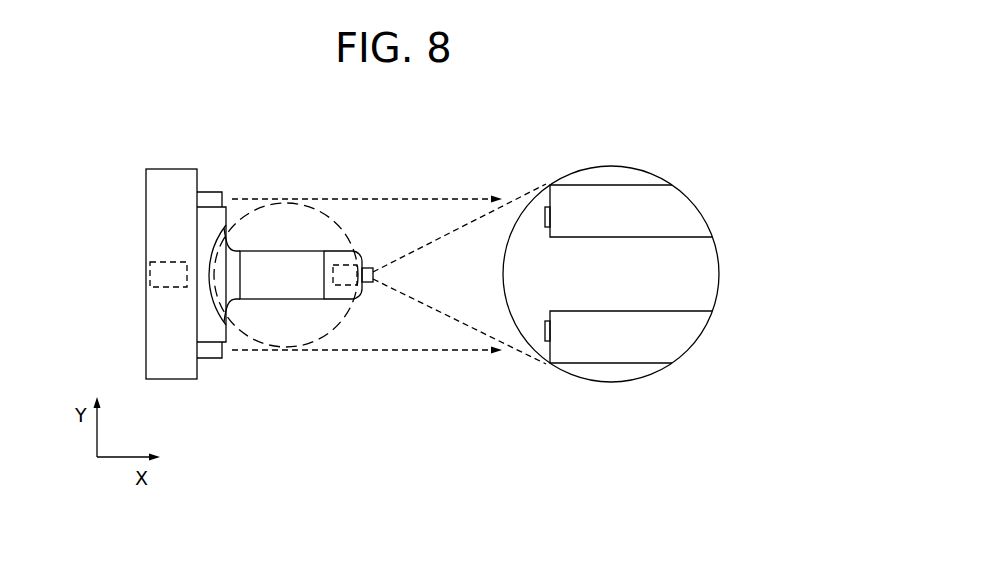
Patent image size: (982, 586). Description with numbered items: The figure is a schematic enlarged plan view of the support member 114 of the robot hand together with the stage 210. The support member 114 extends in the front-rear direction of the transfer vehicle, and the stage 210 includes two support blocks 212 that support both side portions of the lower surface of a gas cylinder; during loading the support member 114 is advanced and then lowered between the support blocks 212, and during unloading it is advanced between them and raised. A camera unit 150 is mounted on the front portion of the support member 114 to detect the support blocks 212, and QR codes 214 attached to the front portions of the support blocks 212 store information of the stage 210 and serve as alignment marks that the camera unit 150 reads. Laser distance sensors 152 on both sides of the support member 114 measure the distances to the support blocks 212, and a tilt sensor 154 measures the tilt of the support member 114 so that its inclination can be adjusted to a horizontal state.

The support member 114 is at (287, 290).
The camera unit 150 is at (348, 277).
The distance sensor 152 is at (212, 358).
The tilt sensor 154 is at (152, 272).
The stage 210 is at (742, 276).
The support block 212 is at (678, 199).
The QR code 214 is at (544, 218).